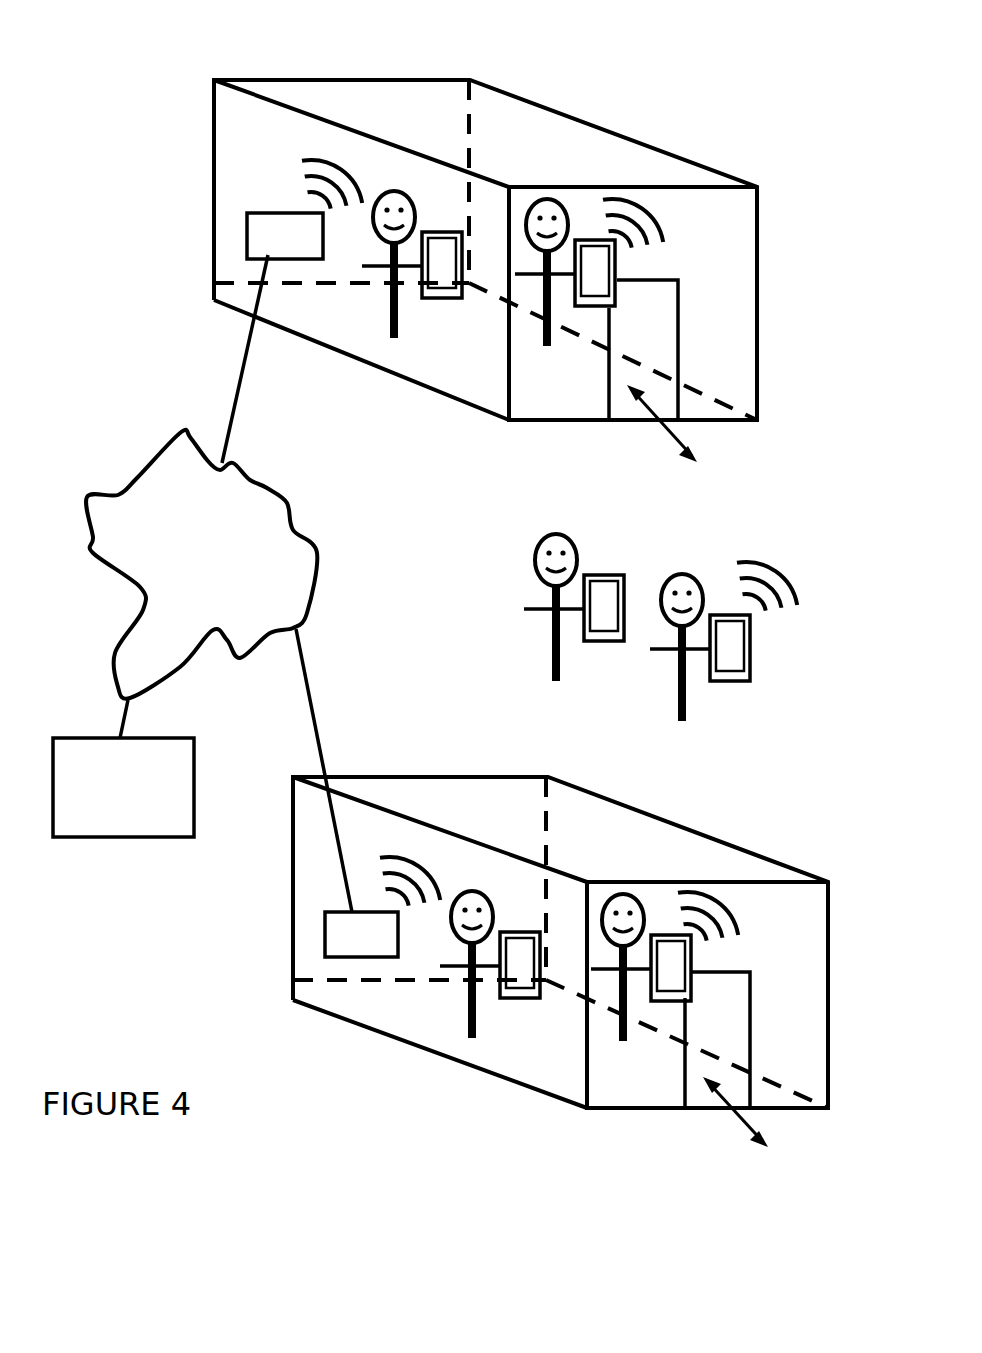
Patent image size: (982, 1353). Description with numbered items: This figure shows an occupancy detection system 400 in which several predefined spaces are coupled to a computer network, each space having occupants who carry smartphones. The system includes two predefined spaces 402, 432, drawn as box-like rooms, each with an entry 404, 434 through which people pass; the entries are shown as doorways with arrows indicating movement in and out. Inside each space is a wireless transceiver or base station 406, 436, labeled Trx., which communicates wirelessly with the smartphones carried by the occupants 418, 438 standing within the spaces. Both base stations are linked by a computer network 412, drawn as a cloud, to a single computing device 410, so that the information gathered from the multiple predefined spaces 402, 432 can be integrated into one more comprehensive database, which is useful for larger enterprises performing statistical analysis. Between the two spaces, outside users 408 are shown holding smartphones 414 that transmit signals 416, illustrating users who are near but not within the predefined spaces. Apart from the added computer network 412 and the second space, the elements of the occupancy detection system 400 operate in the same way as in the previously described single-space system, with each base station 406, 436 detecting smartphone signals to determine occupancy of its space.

The occupancy detection system 400 is at (485, 267).
The predefined space 402 is at (267, 147).
The entry 404 is at (605, 350).
The wireless transceiver or base station 406 is at (243, 232).
The outside user 408 is at (515, 647).
The computing device 410 is at (123, 837).
The computer network 412 is at (295, 592).
The smartphone 414 is at (613, 650).
The signals 416 is at (800, 585).
The occupant 418 is at (417, 323).
The predefined space 432 is at (700, 850).
The entry 434 is at (680, 1040).
The wireless transceiver or base station 436 is at (363, 957).
The occupant 438 is at (493, 1022).